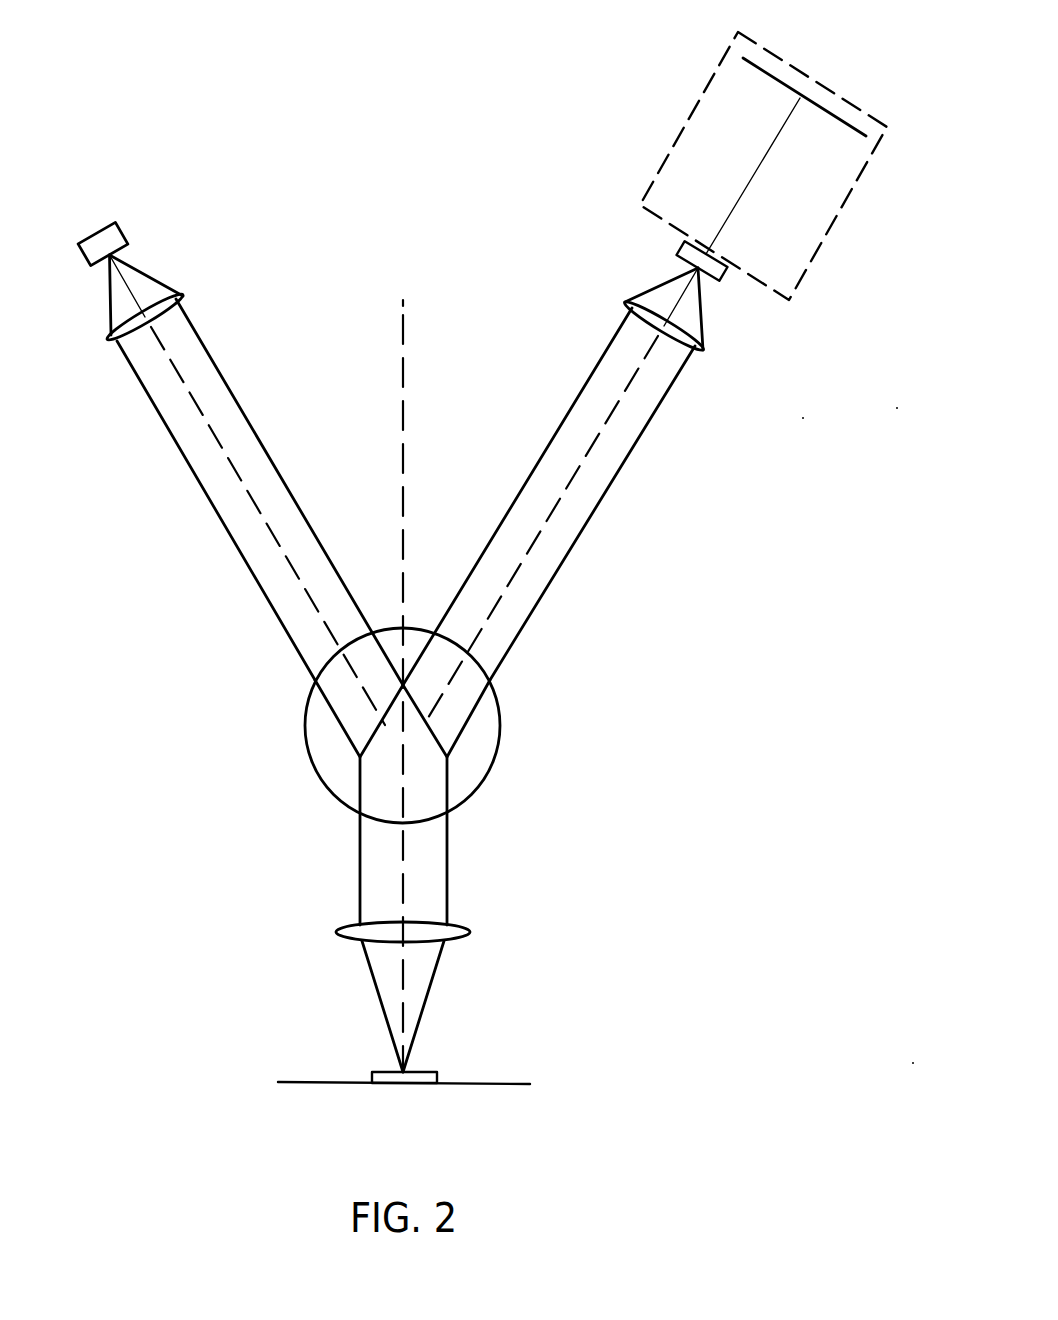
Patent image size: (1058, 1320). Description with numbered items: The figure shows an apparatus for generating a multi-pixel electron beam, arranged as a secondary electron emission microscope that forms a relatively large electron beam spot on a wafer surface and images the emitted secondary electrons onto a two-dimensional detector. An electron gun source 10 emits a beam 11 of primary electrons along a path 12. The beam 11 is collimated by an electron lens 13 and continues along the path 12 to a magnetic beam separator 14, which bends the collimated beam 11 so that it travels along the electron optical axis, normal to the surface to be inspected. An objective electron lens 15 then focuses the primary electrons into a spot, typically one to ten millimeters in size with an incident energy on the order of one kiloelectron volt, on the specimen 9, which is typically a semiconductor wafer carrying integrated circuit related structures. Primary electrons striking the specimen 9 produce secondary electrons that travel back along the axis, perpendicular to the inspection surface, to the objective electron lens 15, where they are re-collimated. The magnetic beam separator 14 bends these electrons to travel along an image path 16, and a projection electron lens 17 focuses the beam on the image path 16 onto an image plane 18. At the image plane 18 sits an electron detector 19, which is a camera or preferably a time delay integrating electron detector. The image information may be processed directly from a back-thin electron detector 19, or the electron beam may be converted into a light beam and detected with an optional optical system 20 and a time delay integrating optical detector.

The specimen 9 is at (442, 1082).
The electron gun source 10 is at (117, 225).
The beam 11 is at (137, 270).
The path 12 is at (213, 433).
The electron lens 13 is at (108, 337).
The magnetic beam separator 14 is at (497, 700).
The objective electron lens 15 is at (472, 932).
The image path 16 is at (597, 438).
The projection electron lens 17 is at (700, 350).
The image plane 18 is at (681, 250).
The electron detector 19 is at (727, 250).
The optical system 20 is at (693, 110).